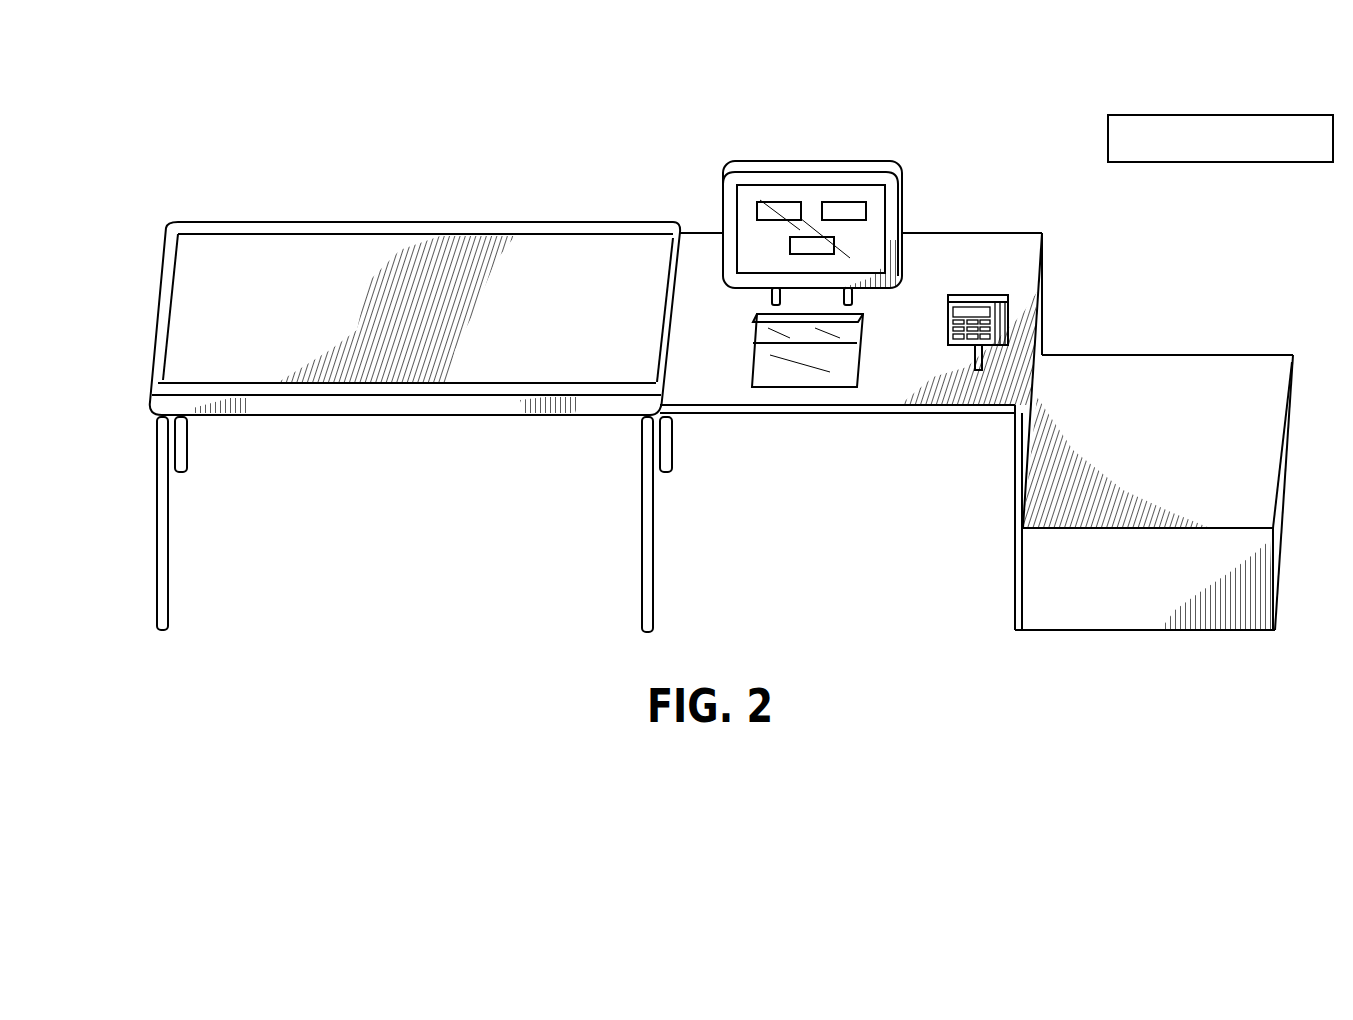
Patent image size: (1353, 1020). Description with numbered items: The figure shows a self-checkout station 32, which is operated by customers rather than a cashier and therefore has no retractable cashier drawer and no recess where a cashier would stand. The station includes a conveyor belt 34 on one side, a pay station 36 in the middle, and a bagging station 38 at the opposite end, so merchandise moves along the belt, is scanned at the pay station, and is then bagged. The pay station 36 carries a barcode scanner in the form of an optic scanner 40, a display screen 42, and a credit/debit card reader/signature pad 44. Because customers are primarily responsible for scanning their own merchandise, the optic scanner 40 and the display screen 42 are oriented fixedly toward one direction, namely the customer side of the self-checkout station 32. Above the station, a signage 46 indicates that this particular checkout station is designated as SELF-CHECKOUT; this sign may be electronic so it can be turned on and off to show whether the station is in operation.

The self-checkout station 32 is at (564, 119).
The conveyor belt 34 is at (285, 258).
The pay station 36 is at (967, 232).
The bagging station 38 is at (1204, 355).
The optic scanner 40 is at (785, 388).
The display screen 42 is at (835, 192).
The credit/debit card reader/signature pad 44 is at (963, 316).
The signage 46 is at (1176, 99).